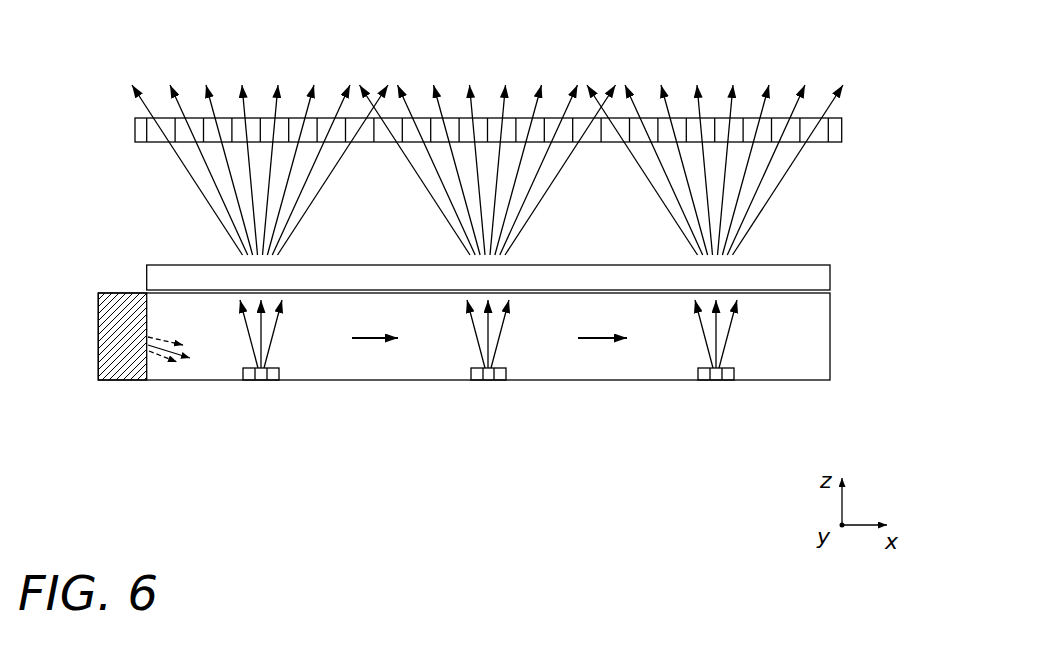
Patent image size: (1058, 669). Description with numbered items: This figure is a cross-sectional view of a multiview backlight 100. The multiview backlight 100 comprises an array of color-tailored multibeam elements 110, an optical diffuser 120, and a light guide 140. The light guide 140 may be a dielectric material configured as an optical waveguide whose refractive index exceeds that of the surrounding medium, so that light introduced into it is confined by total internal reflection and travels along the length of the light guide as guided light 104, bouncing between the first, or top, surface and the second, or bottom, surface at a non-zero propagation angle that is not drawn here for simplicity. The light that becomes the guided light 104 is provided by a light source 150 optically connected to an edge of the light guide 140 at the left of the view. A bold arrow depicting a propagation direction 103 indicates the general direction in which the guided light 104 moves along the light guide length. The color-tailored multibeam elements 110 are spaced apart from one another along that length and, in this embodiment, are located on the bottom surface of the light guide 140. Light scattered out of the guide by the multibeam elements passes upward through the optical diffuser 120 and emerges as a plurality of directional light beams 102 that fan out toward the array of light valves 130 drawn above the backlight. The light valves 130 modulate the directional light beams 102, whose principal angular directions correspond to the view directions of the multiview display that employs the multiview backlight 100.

The multiview backlight 100 is at (807, 232).
The directional light beams 102 is at (842, 163).
The propagation direction 103 is at (376, 347).
The guided light 104 is at (168, 327).
The color-tailored multibeam elements 110 is at (260, 385).
The optical diffuser 120 is at (830, 272).
The light valves 130 is at (125, 125).
The light guide 140 is at (830, 335).
The light source 150 is at (123, 385).